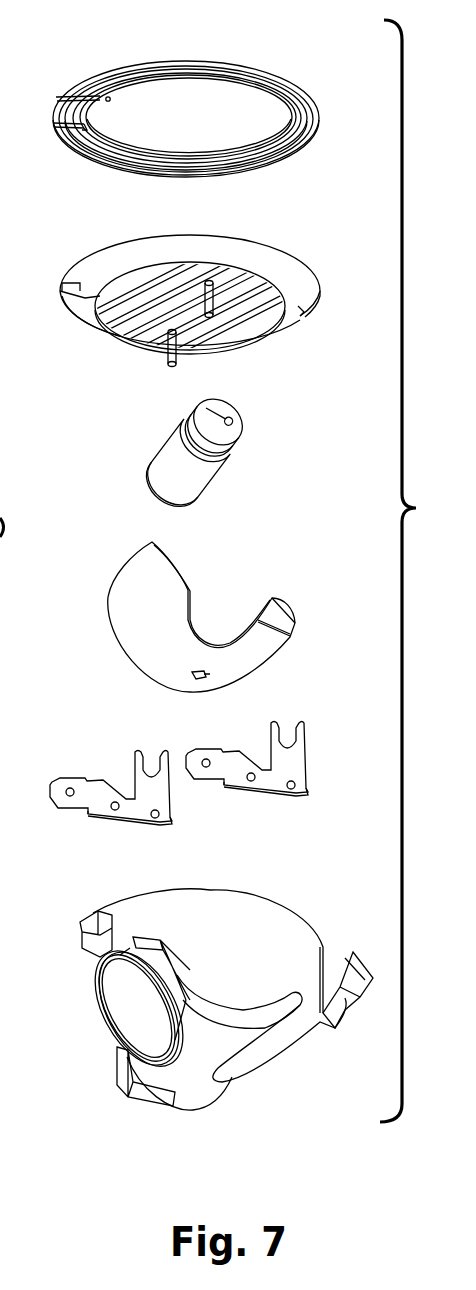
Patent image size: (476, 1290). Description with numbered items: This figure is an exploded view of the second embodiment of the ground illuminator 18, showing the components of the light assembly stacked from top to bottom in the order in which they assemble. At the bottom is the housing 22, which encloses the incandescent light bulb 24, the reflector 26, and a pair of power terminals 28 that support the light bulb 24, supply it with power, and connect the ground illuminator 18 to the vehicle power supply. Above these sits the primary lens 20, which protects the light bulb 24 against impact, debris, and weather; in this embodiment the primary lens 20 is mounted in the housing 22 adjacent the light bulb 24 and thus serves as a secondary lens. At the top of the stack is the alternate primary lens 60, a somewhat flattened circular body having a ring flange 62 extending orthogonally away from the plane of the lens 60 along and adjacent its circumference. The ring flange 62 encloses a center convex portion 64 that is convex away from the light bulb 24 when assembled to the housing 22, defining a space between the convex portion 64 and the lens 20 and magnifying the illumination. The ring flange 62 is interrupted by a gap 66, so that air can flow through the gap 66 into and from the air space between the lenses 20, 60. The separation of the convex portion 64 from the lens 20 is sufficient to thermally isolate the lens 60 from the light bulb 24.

The ground illuminator 18 is at (416, 571).
The primary lens 20 is at (107, 252).
The housing 22 is at (300, 932).
The incandescent light bulb 24 is at (170, 447).
The reflector 26 is at (127, 575).
The power terminals 28 is at (82, 802).
The alternate primary lens 60 is at (170, 107).
The ring flange 62 is at (258, 150).
The center convex portion 64 is at (190, 122).
The gap 66 is at (67, 117).